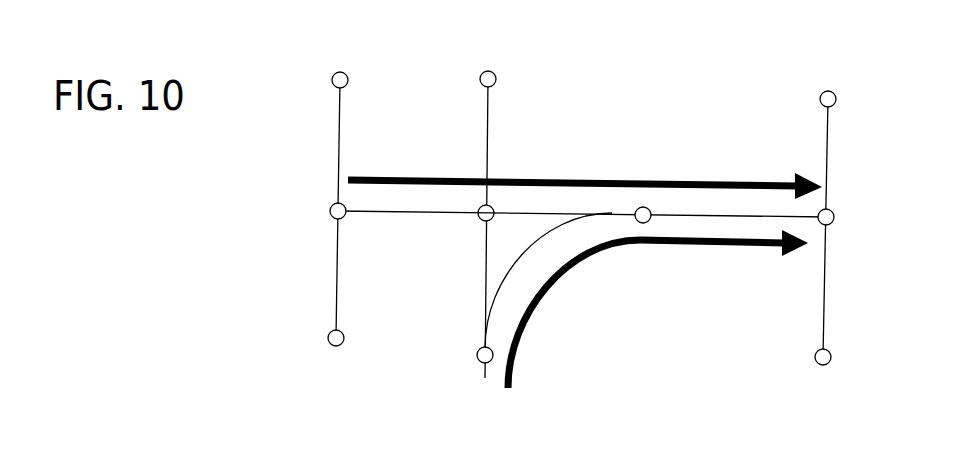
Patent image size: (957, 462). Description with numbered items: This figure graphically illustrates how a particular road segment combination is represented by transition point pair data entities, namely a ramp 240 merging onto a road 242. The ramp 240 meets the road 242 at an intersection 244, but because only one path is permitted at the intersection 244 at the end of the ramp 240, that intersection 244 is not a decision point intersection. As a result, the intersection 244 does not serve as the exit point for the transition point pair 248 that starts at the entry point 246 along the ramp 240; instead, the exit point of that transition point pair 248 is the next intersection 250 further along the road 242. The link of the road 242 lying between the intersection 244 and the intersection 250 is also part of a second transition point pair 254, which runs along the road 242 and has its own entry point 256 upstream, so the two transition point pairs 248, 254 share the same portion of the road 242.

The ramp 240 is at (527, 246).
The road 242 is at (753, 213).
The intersection 244 is at (645, 227).
The entry point 246 is at (472, 352).
The transition point pair 248 is at (547, 305).
The intersection 250 is at (850, 225).
The transition point pair 254 is at (626, 171).
The entry point 256 is at (318, 213).